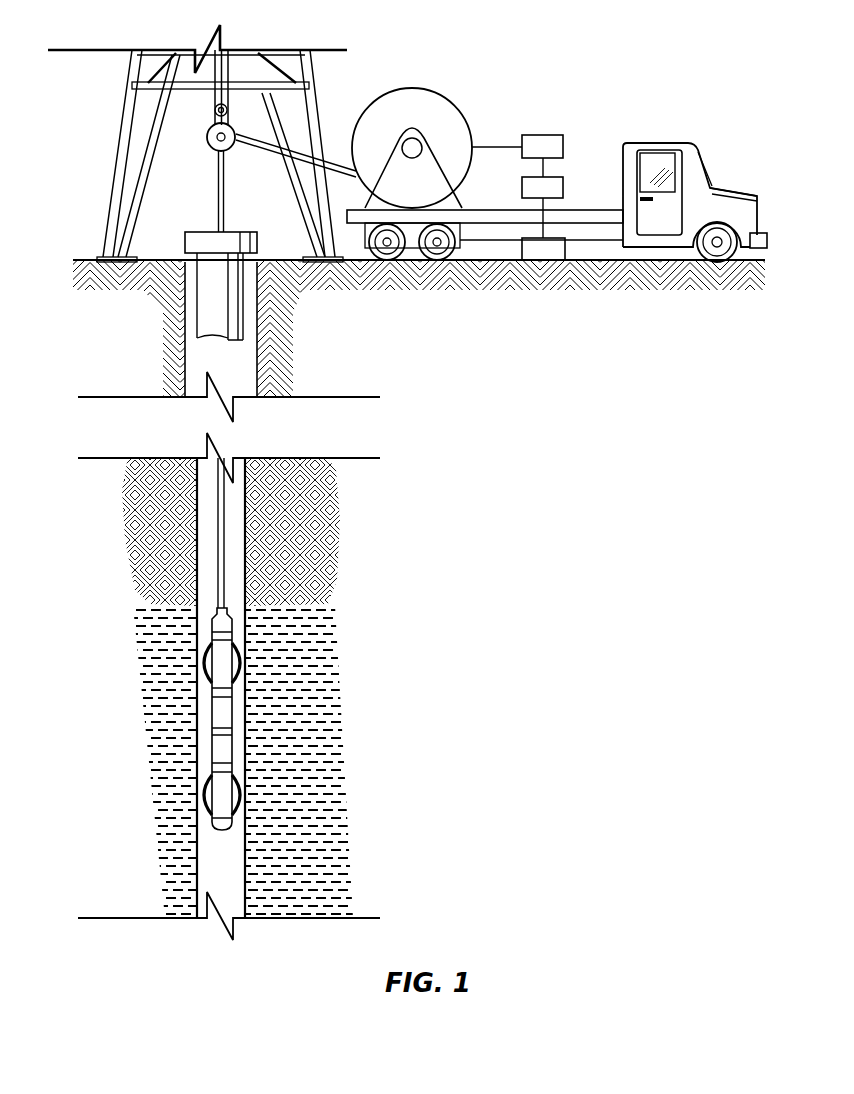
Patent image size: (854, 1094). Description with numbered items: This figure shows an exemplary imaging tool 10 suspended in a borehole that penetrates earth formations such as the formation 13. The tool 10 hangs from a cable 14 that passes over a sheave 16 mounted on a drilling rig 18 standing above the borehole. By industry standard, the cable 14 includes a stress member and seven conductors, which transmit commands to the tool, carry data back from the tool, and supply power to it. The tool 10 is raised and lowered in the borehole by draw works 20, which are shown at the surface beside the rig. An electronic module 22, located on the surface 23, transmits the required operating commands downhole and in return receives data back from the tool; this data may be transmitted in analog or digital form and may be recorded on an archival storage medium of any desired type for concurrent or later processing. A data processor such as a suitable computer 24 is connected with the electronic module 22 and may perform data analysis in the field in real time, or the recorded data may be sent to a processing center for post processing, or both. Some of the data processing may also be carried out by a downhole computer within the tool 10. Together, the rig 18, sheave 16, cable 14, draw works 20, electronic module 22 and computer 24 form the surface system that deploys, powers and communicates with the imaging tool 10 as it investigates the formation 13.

The imaging tool 10 is at (236, 714).
The earth formation 13 is at (355, 565).
The cable 14 is at (216, 208).
The sheave 16 is at (206, 137).
The drilling rig 18 is at (125, 93).
The draw works 20 is at (412, 88).
The electronic module 22 is at (555, 135).
The surface 23 is at (83, 260).
The computer 24 is at (557, 177).